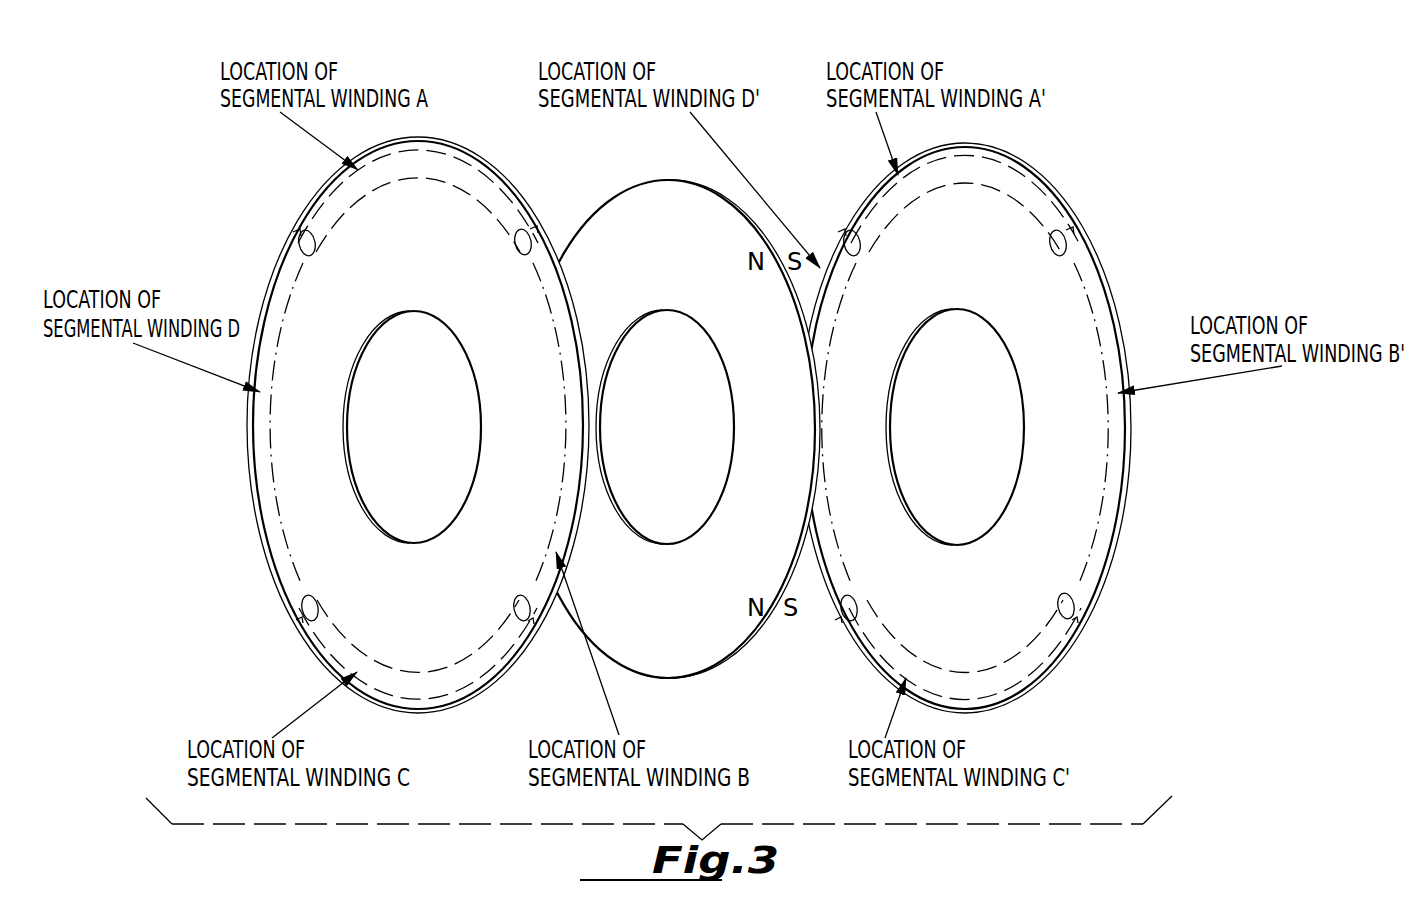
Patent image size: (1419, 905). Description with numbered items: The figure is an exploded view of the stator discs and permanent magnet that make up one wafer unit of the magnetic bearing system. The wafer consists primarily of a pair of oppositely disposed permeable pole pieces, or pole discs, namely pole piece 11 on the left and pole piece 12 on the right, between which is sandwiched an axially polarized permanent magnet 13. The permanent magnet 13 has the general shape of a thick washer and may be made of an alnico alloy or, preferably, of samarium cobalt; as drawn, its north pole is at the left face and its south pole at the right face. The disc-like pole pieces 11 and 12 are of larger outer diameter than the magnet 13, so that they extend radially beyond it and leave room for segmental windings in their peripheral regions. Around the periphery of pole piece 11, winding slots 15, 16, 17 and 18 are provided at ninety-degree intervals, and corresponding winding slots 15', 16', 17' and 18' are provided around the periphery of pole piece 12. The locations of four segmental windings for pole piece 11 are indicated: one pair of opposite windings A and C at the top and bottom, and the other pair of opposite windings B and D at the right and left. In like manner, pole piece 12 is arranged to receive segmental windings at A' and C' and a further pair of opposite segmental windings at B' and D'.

The pole piece 11 is at (368, 510).
The pole piece 12 is at (895, 398).
The permanent magnet 13 is at (687, 645).
The winding slot 15 is at (329, 244).
The winding slot 16 is at (493, 241).
The winding slot 17 is at (498, 597).
The winding slot 18 is at (334, 592).
The winding slot 15' is at (882, 242).
The winding slot 16' is at (1041, 250).
The winding slot 17' is at (1035, 600).
The winding slot 18' is at (872, 594).